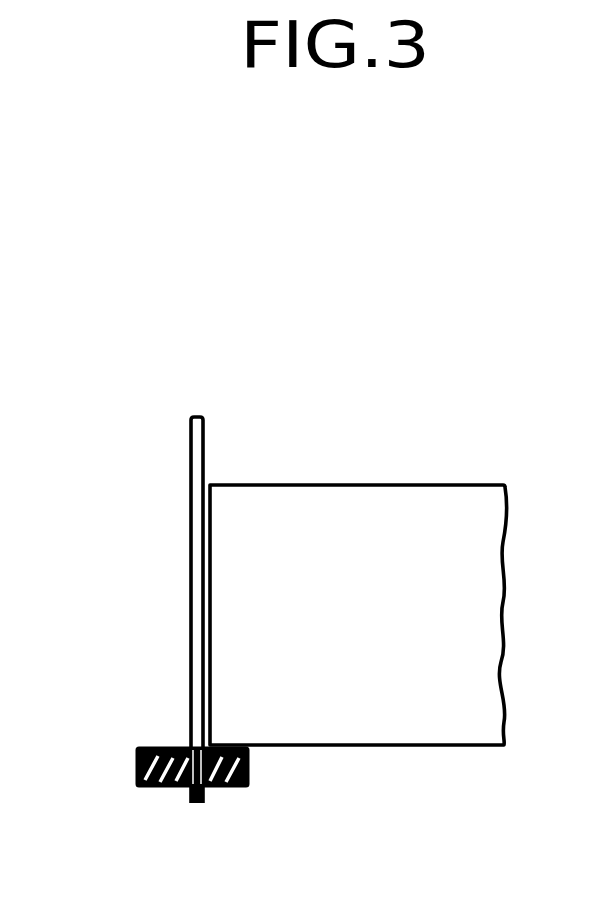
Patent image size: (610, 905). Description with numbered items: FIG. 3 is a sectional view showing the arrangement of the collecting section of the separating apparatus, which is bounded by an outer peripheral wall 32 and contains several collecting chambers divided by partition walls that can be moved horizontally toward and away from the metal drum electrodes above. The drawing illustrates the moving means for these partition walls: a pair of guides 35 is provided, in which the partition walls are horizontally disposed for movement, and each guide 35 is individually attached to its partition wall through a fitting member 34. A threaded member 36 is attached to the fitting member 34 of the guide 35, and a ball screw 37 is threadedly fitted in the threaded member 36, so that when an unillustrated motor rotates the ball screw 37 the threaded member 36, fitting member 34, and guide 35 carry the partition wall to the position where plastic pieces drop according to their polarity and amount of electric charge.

The outer peripheral wall 32 is at (190, 437).
The fitting member 34 is at (248, 755).
The guide 35 is at (228, 786).
The threaded member 36 is at (138, 770).
The ball screw 37 is at (150, 747).